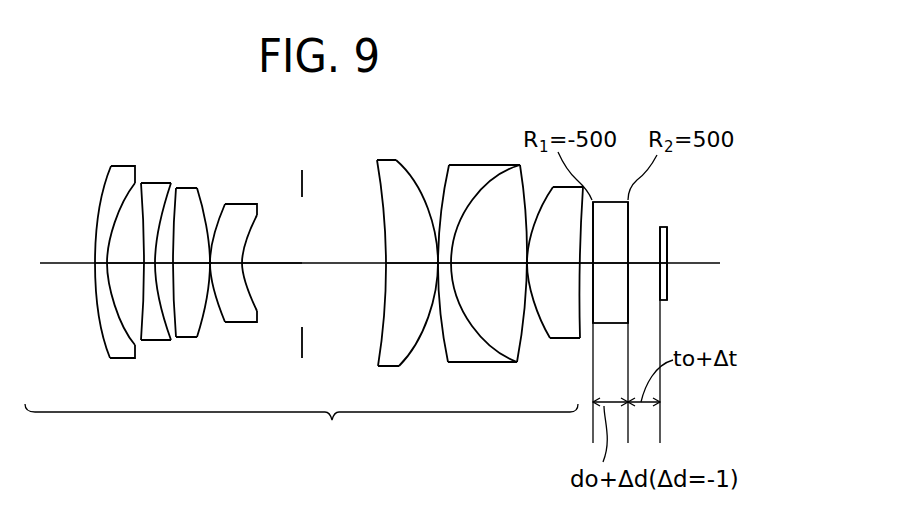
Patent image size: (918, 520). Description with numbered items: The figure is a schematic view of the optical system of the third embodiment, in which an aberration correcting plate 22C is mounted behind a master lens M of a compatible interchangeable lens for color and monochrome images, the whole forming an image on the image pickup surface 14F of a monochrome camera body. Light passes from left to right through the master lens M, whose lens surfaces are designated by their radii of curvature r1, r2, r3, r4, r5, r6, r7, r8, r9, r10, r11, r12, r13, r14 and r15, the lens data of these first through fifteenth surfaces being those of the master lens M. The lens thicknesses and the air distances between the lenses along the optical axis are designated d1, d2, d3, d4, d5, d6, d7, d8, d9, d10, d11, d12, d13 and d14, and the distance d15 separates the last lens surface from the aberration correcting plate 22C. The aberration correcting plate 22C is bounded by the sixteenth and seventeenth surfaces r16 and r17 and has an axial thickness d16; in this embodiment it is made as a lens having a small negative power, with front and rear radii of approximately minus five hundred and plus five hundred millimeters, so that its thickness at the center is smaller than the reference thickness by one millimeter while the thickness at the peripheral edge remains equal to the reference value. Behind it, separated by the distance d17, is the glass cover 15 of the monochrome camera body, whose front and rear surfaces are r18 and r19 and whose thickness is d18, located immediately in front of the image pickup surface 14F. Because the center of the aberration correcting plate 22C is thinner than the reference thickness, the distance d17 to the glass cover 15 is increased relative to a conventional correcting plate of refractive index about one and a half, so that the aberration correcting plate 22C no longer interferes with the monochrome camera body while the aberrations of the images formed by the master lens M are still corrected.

The first lens surface radius of curvature r1 is at (111, 166).
The second lens surface radius of curvature r2 is at (135, 183).
The third lens surface radius of curvature r3 is at (141, 183).
The fourth lens surface radius of curvature r4 is at (171, 183).
The fifth lens surface radius of curvature r5 is at (176, 188).
The sixth lens surface radius of curvature r6 is at (197, 188).
The seventh lens surface radius of curvature r7 is at (236, 204).
The eighth lens surface radius of curvature r8 is at (257, 204).
The ninth lens surface radius of curvature r9 is at (377, 160).
The tenth lens surface radius of curvature r10 is at (396, 160).
The eleventh lens surface radius of curvature r11 is at (449, 165).
The twelfth lens surface radius of curvature r12 is at (520, 165).
The thirteenth lens surface radius of curvature r13 is at (520, 165).
The fourteenth lens surface radius of curvature r14 is at (515, 207).
The fifteenth lens surface radius of curvature r15 is at (550, 207).
The sixteenth surface radius of curvature r16 is at (625, 200).
The seventeenth surface radius of curvature r17 is at (628, 202).
The eighteenth surface radius of curvature r18 is at (733, 229).
The nineteenth surface radius of curvature r19 is at (739, 243).
The first axial thickness d1 is at (98, 263).
The second axial distance d2 is at (123, 263).
The third axial thickness d3 is at (151, 263).
The fourth axial distance d4 is at (163, 263).
The fifth axial thickness d5 is at (187, 263).
The sixth axial distance d6 is at (210, 263).
The seventh axial thickness d7 is at (228, 263).
The eighth axial distance d8 is at (273, 263).
The ninth axial thickness d9 is at (402, 263).
The tenth axial distance d10 is at (438, 263).
The eleventh axial thickness d11 is at (445, 263).
The twelfth axial thickness d12 is at (473, 263).
The thirteenth axial distance d13 is at (530, 263).
The fourteenth axial thickness d14 is at (560, 263).
The fifteenth axial distance d15 is at (587, 263).
The sixteenth axial thickness d16 is at (610, 263).
The seventeenth axial distance d17 is at (640, 263).
The eighteenth axial thickness d18 is at (665, 265).
The glass cover 15 is at (667, 232).
The image pickup surface 14F is at (667, 263).
The aberration correcting plate 22C is at (610, 265).
The master lens M is at (301, 430).